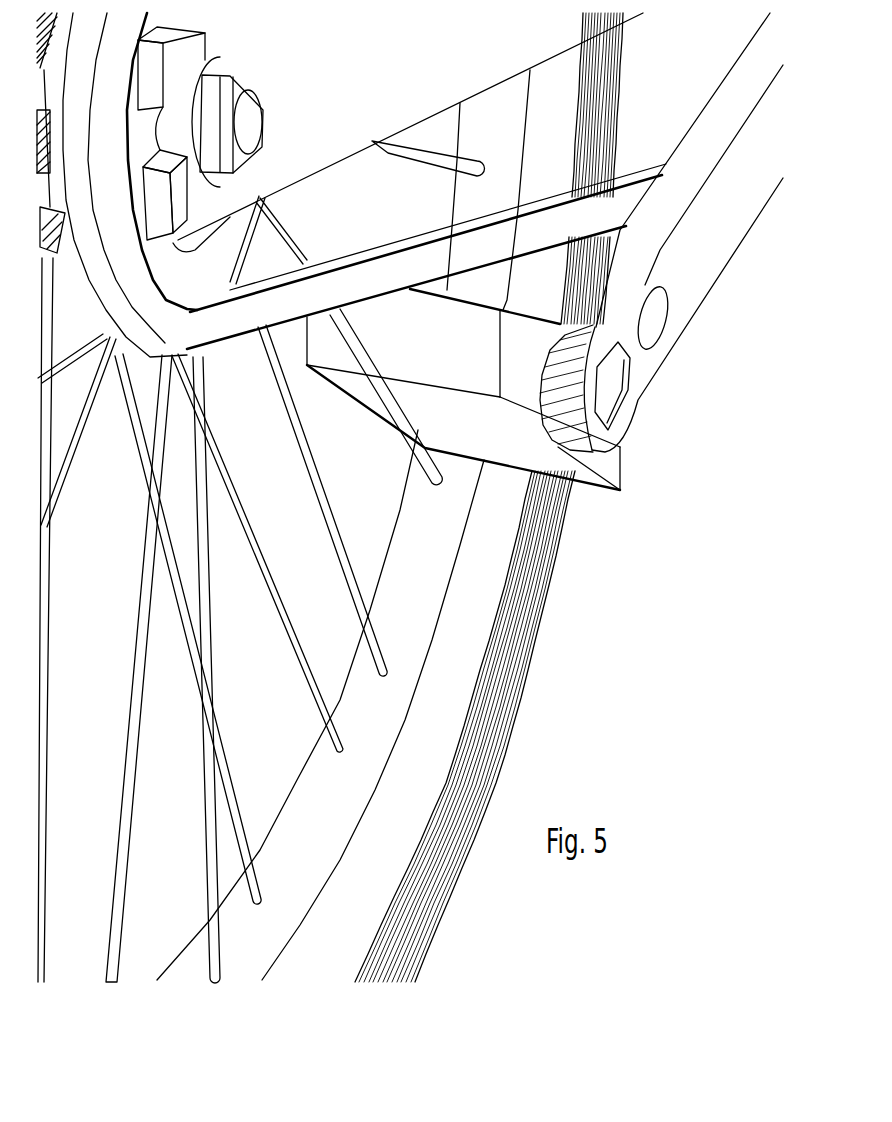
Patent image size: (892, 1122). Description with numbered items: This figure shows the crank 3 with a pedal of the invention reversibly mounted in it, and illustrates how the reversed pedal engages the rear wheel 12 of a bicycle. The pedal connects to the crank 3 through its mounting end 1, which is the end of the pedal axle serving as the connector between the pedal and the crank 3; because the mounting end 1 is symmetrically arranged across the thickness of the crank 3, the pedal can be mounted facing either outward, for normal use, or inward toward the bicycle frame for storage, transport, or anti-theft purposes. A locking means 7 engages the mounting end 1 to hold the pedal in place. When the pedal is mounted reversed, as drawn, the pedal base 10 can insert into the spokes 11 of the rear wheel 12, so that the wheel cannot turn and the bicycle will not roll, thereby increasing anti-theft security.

The mounting end 1 is at (612, 393).
The crank 3 is at (720, 213).
The locking means 7 is at (658, 330).
The pedal base 10 is at (517, 453).
The spokes 11 is at (388, 393).
The rear wheel 12 is at (420, 780).